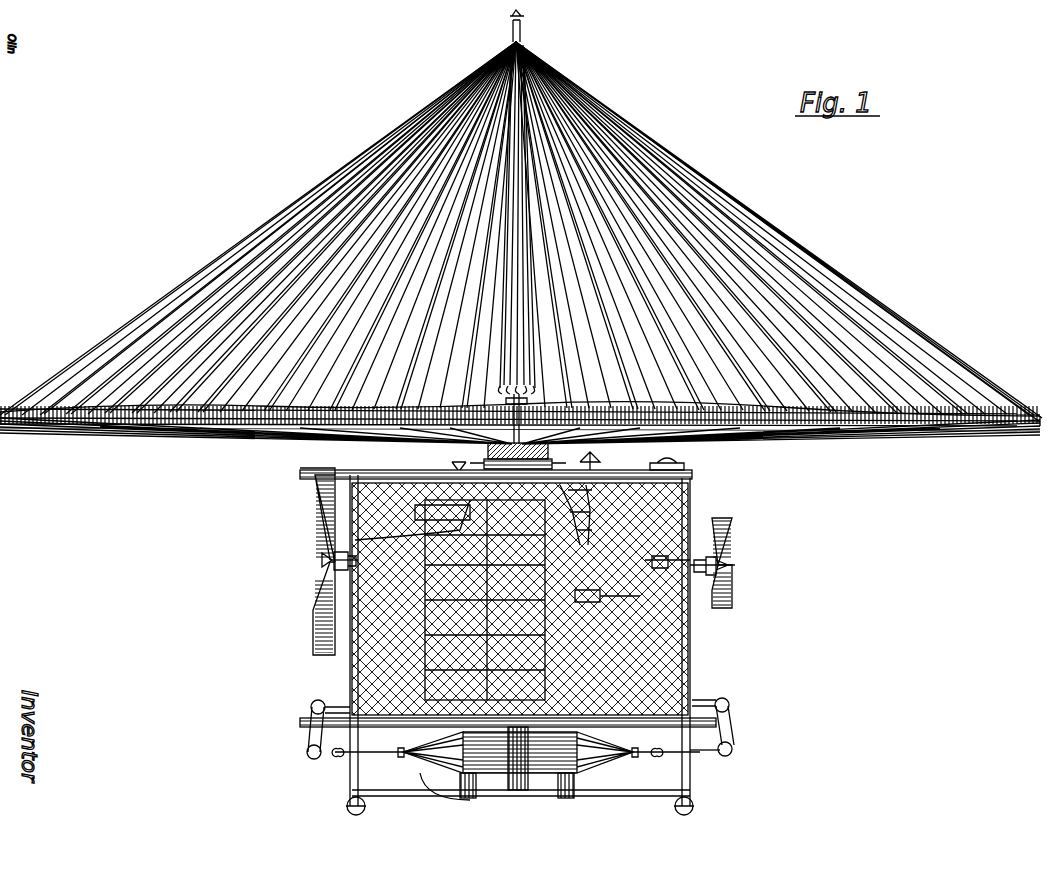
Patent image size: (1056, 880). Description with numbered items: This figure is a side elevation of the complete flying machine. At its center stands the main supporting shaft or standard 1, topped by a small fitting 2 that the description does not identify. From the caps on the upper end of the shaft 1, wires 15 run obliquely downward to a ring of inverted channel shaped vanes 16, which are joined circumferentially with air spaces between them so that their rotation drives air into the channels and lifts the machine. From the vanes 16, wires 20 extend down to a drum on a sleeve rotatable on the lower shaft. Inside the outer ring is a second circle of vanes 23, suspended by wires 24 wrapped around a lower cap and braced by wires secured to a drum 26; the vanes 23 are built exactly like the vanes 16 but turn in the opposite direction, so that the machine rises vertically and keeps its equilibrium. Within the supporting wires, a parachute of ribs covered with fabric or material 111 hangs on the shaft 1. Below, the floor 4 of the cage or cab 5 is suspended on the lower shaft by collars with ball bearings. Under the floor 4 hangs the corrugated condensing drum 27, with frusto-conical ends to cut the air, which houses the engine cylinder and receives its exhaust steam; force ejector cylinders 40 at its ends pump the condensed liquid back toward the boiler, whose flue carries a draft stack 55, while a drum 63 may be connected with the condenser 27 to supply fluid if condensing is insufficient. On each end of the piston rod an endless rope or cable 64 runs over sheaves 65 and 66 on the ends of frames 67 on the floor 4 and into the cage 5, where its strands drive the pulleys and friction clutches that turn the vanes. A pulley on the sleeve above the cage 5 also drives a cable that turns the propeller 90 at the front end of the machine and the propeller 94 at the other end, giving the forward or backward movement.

The mast top fitting 2 is at (523, 18).
The wires 15 is at (362, 152).
The wires 24 is at (292, 235).
The fabric or material 111 is at (517, 352).
The main supporting shaft or standard 1 is at (526, 403).
The drum 26 is at (495, 404).
The inverted channel shaped vanes 16 is at (226, 432).
The wires 20 is at (165, 432).
The vanes 23 is at (642, 406).
The draft stack 55 is at (304, 476).
The propeller 94 is at (322, 500).
The drum 63 is at (338, 546).
The propeller 90 is at (730, 534).
The cage or cab 5 is at (690, 662).
The cylinders 40 is at (576, 786).
The condensing drum 27 is at (420, 758).
The floor 4 is at (655, 756).
The sheaves 65 is at (312, 752).
The sheaves 66 is at (728, 704).
The frames 67 is at (700, 720).
The endless rope or cable 64 is at (700, 752).